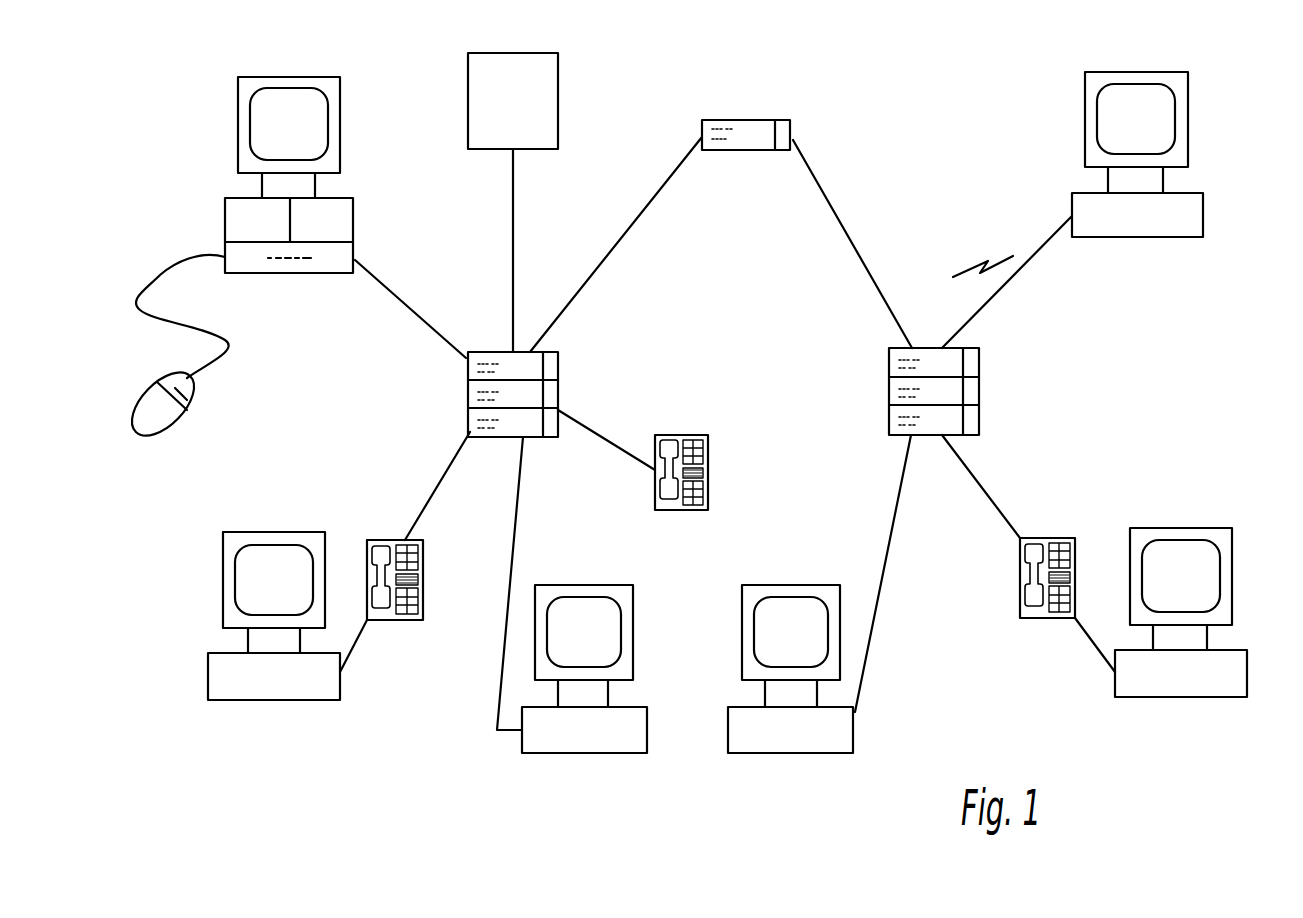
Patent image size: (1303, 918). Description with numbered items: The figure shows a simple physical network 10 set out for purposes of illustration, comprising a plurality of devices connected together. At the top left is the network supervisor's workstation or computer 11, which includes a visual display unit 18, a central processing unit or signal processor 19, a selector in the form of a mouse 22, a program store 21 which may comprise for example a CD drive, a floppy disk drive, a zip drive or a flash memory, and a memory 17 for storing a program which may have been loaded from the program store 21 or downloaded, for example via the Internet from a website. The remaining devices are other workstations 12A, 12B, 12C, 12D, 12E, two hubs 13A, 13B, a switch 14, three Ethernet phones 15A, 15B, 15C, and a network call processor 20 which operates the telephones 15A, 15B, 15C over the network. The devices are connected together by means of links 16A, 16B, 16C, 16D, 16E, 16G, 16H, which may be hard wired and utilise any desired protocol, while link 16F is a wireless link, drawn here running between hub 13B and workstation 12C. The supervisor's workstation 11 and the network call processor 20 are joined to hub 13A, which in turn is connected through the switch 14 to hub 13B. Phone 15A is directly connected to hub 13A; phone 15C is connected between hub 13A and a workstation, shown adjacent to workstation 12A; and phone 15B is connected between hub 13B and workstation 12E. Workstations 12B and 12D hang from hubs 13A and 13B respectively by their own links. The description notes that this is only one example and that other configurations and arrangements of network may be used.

The physical network 10 is at (922, 94).
The network supervisor's workstation 11 is at (369, 165).
The workstation 12A is at (301, 721).
The workstation 12B is at (610, 761).
The workstation 12C is at (1172, 261).
The workstation 12D is at (812, 761).
The workstation 12E is at (1214, 717).
The hub 13A is at (592, 390).
The hub 13B is at (1006, 392).
The switch 14 is at (757, 120).
The Ethernet phone 15A is at (710, 473).
The Ethernet phone 15B is at (1018, 578).
The Ethernet phone 15C is at (425, 578).
The link 16A is at (413, 310).
The link 16B is at (428, 503).
The link 16C is at (525, 497).
The link 16D is at (607, 235).
The link 16E is at (848, 232).
The wireless link 16F is at (1012, 280).
The link 16G is at (885, 538).
The link 16H is at (1005, 512).
The memory 17 is at (345, 218).
The visual display unit 18 is at (330, 98).
The central processing unit 19 is at (230, 219).
The network call processor 20 is at (545, 97).
The program store 21 is at (333, 262).
The mouse 22 is at (172, 428).